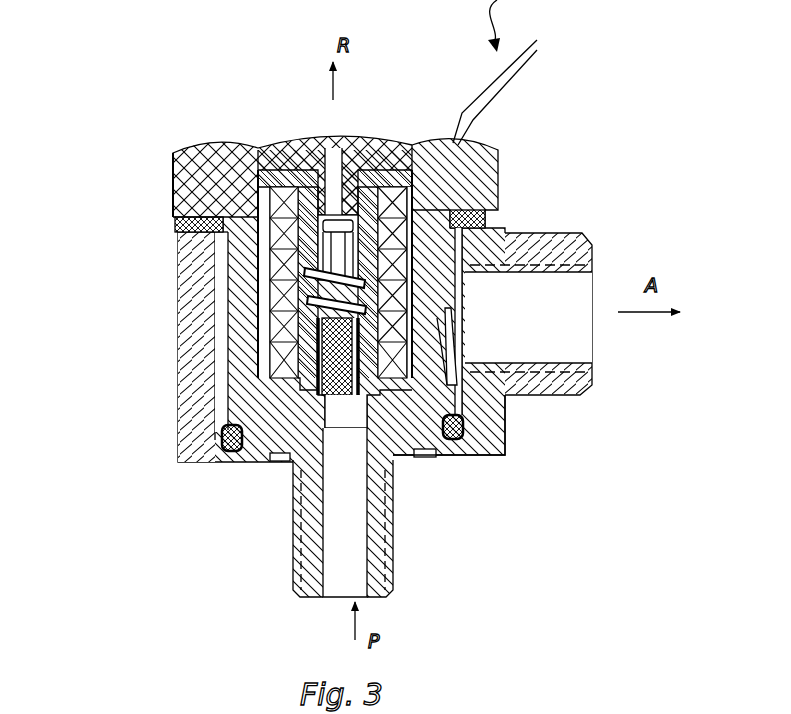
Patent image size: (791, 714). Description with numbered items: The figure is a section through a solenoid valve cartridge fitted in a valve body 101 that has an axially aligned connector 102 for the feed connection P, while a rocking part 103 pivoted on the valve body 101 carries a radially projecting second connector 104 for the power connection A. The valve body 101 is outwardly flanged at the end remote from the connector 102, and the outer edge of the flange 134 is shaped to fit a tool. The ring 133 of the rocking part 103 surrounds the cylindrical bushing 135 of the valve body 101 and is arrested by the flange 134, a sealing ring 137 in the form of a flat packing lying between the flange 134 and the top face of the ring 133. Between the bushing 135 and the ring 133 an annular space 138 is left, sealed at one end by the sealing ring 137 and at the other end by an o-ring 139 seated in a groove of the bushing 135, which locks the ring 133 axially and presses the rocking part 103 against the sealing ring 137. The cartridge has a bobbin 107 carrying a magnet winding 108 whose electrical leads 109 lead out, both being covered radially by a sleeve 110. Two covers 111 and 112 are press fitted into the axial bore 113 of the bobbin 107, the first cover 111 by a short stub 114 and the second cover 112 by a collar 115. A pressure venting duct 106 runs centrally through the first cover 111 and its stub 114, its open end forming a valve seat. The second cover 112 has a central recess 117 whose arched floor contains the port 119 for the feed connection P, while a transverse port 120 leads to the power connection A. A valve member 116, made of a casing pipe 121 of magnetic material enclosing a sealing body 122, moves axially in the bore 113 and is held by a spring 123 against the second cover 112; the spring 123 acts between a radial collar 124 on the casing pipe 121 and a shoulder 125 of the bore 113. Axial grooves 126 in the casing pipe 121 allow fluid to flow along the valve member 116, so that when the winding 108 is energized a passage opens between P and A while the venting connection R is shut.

The valve body 101 is at (292, 445).
The connector 102 is at (310, 577).
The rocking part 103 is at (512, 457).
The second connector 104 is at (572, 260).
The pressure venting duct 106 is at (365, 143).
The bobbin 107 is at (263, 165).
The magnet winding 108 is at (230, 152).
The electrical leads 109 is at (512, 72).
The sleeve 110 is at (178, 153).
The first cover 111 is at (292, 178).
The second cover 112 is at (300, 440).
The axial bore 113 is at (363, 150).
The short stub 114 is at (293, 148).
The collar 115 is at (300, 388).
The valve member 116 is at (305, 283).
The recess 117 is at (245, 425).
The port 119 is at (310, 473).
The port 120 is at (448, 453).
The casing pipe 121 is at (530, 238).
The sealing body 122 is at (400, 307).
The spring 123 is at (422, 262).
The radial collar 124 is at (508, 375).
The shoulder 125 is at (432, 212).
The axial grooves 126 is at (407, 147).
The ring 133 is at (190, 335).
The flange 134 is at (483, 160).
The cylindrical bushing 135 is at (159, 299).
The sealing ring 137 is at (178, 217).
The annular space 138 is at (218, 293).
The o-ring 139 is at (255, 402).